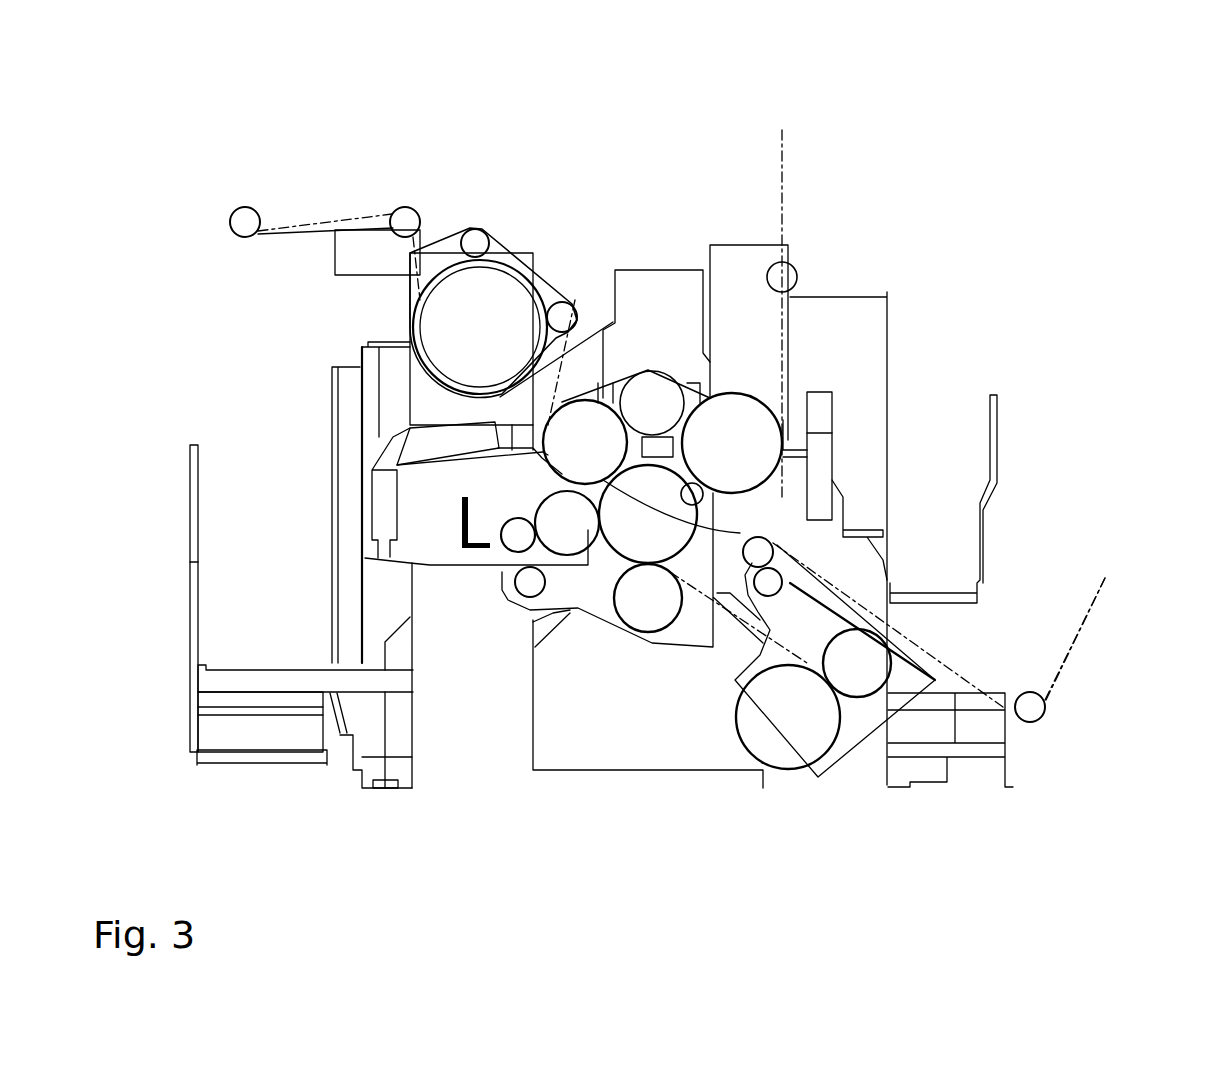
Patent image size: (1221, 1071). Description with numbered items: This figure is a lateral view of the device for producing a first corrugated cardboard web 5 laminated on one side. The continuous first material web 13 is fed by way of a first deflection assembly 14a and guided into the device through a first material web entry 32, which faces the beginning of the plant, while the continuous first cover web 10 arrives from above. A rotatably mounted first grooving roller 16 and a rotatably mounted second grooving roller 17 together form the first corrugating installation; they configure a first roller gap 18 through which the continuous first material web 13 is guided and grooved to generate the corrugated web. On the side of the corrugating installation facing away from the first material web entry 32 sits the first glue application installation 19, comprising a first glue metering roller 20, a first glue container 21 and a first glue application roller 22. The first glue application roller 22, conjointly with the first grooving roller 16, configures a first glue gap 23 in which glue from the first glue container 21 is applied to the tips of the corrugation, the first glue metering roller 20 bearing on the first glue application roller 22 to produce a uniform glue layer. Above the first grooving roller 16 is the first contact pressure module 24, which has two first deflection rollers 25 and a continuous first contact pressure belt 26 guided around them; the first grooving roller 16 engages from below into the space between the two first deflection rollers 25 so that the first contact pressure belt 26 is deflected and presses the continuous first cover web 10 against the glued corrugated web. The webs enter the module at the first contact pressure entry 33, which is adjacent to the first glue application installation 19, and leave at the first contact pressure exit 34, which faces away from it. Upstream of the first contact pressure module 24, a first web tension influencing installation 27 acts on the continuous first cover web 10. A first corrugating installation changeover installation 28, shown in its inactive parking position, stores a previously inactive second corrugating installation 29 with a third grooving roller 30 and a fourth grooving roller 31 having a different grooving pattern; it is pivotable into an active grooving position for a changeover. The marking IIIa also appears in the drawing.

The continuous first cover web 10 is at (318, 222).
The first web tension influencing installation 27 is at (537, 267).
The continuous first contact pressure belt 26 is at (625, 390).
The first contact pressure module 24 is at (683, 371).
The first deflection rollers 25 is at (732, 407).
The first corrugated cardboard web laminated on one side 5 is at (776, 190).
The section position IIIa is at (806, 177).
The first glue container 21 is at (413, 507).
The first glue application roller 22 is at (557, 510).
The first glue metering roller 20 is at (519, 535).
The first grooving roller 16 is at (690, 500).
The second grooving roller 17 is at (653, 620).
The first glue gap 23 is at (601, 490).
The first roller gap 18 is at (633, 562).
The first glue application installation 19 is at (458, 568).
The first contact pressure exit 34 is at (690, 508).
The first contact pressure entry 33 is at (700, 529).
The first material web entry 32 is at (883, 614).
The first corrugating installation changeover installation 28 is at (846, 763).
The third grooving roller 30 is at (783, 748).
The fourth grooving roller 31 is at (860, 657).
The second corrugating installation 29 is at (853, 714).
The continuous first material web 13 is at (1065, 688).
The first deflection assembly 14a is at (1046, 707).